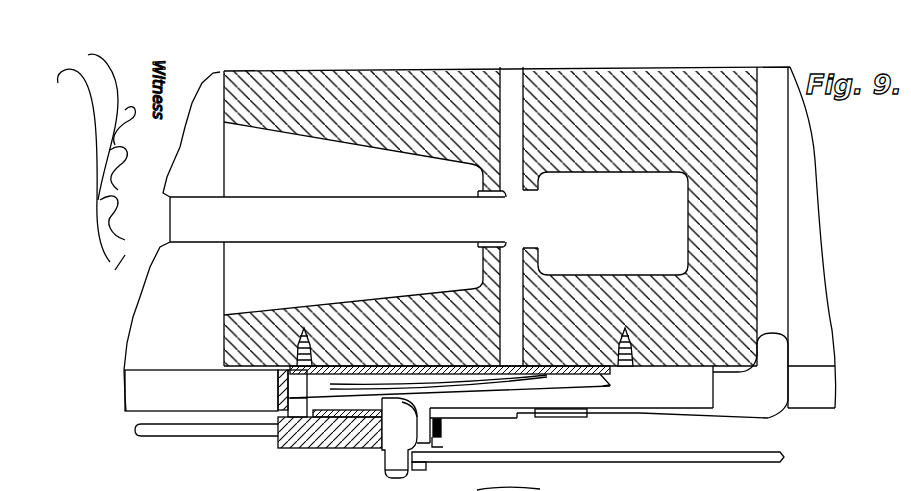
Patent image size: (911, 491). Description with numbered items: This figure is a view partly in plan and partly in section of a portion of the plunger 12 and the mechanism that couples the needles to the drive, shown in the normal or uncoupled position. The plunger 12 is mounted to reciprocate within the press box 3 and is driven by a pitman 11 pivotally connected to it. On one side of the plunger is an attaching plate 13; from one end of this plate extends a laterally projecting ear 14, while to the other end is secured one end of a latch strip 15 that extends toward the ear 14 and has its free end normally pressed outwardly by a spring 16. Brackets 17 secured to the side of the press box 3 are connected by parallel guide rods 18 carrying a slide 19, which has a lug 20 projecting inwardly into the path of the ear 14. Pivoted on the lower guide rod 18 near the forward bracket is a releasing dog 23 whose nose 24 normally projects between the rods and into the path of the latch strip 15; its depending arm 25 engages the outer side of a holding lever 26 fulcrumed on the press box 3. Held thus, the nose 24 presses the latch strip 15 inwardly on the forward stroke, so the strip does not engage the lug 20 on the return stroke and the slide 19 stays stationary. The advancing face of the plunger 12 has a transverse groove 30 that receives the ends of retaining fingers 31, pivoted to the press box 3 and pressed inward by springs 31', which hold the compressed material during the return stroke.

The press box 3 is at (148, 389).
The pitman 11 is at (220, 230).
The plunger 12 is at (440, 142).
The attaching plate 13 is at (332, 369).
The laterally projecting ear 14 is at (277, 393).
The latch strip 15 is at (534, 383).
The spring 16 is at (443, 382).
The brackets 17 is at (437, 433).
The guide rods 18 is at (226, 428).
The slide 19 is at (293, 442).
The lug 20 is at (302, 405).
The releasing dog 23 is at (390, 444).
The nose 24 is at (443, 418).
The depending arm 25 is at (400, 478).
The holding lever 26 is at (425, 469).
The transverse groove 30 is at (772, 257).
The retaining fingers 31 is at (756, 389).
The springs 31' is at (599, 426).